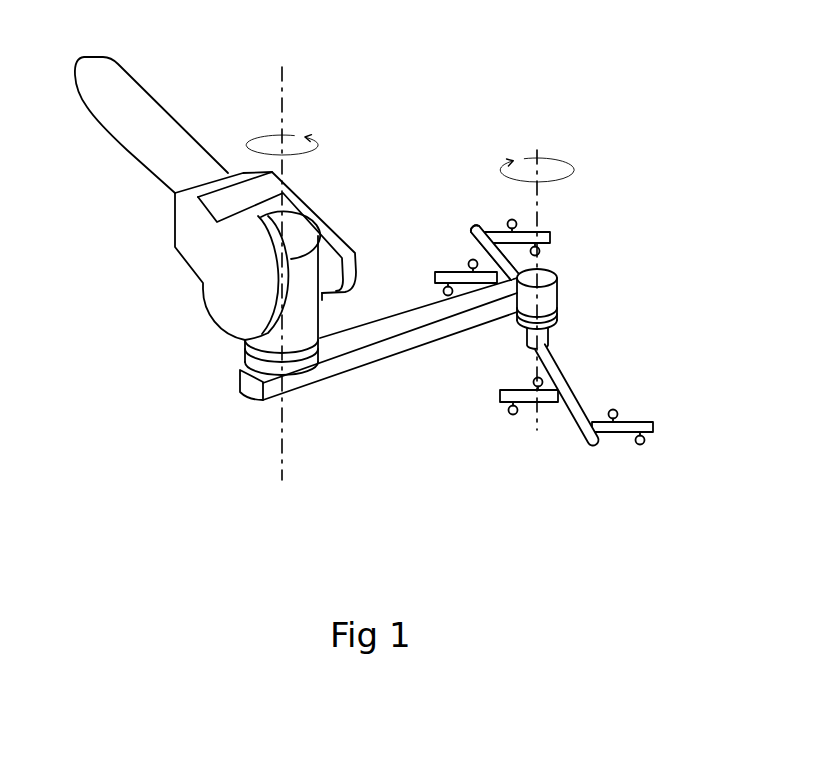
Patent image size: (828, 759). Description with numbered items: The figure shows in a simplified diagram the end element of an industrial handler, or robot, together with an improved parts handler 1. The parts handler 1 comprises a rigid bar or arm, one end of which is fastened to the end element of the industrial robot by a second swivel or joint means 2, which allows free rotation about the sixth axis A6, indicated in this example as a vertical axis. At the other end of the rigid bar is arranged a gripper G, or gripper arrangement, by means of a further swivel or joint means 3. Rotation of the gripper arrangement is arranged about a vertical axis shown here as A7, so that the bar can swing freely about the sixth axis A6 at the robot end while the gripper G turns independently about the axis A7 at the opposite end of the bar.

The parts handler 1 is at (390, 340).
The second swivel or joint means 2 is at (235, 370).
The swivel or joint means 3 is at (562, 303).
The gripper G is at (544, 332).
The sixth axis A6 is at (269, 273).
The vertical axis A7 is at (565, 280).